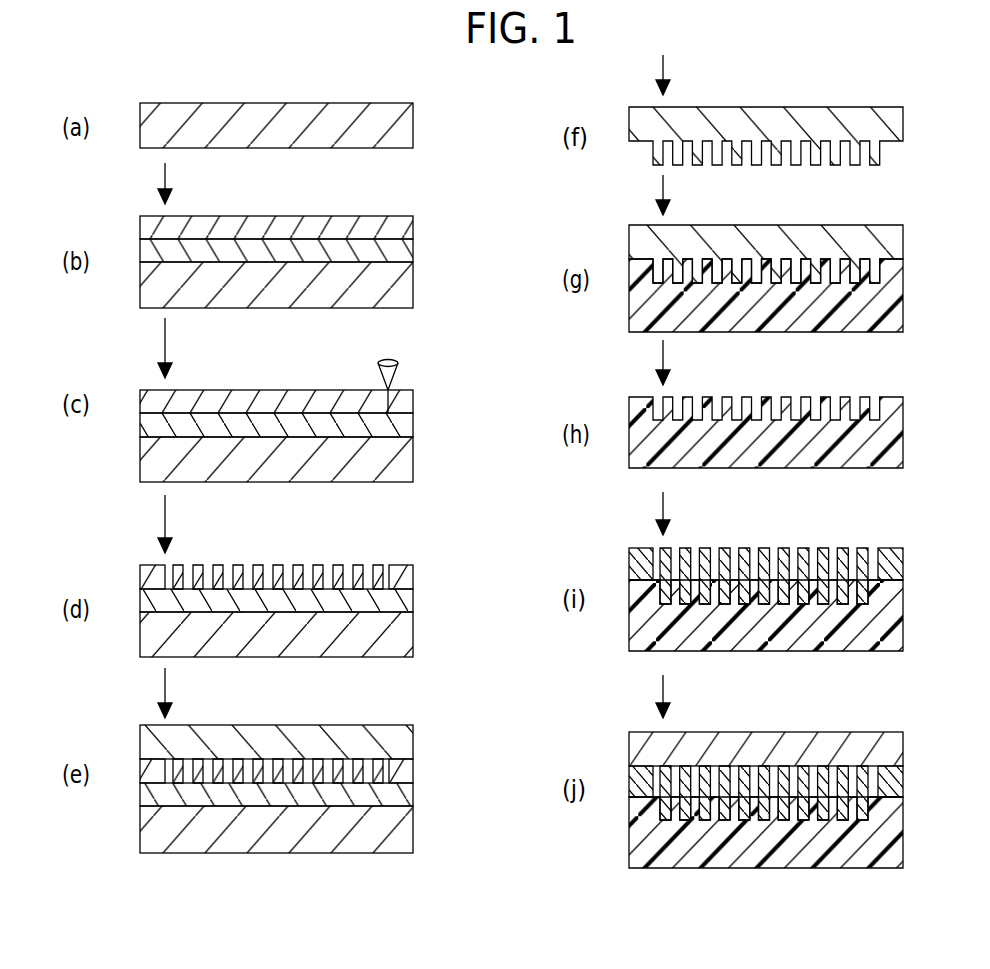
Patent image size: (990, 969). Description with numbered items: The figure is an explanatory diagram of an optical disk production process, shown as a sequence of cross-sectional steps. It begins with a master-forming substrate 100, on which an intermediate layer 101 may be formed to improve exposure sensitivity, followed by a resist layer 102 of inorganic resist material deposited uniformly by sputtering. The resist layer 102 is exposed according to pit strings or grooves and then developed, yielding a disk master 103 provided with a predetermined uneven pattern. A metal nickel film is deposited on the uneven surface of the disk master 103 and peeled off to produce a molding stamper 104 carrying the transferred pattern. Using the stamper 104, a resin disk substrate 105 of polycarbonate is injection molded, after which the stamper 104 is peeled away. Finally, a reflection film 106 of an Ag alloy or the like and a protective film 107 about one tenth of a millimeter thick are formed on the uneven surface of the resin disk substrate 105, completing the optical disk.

The master-forming substrate 100 is at (413, 126).
The intermediate layer 101 is at (413, 256).
The resist layer 102 is at (413, 230).
The disk master 103 is at (127, 440).
The molding stamper 104 is at (413, 748).
The resin disk substrate 105 is at (903, 298).
The reflection film 106 is at (903, 563).
The protective film 107 is at (903, 750).